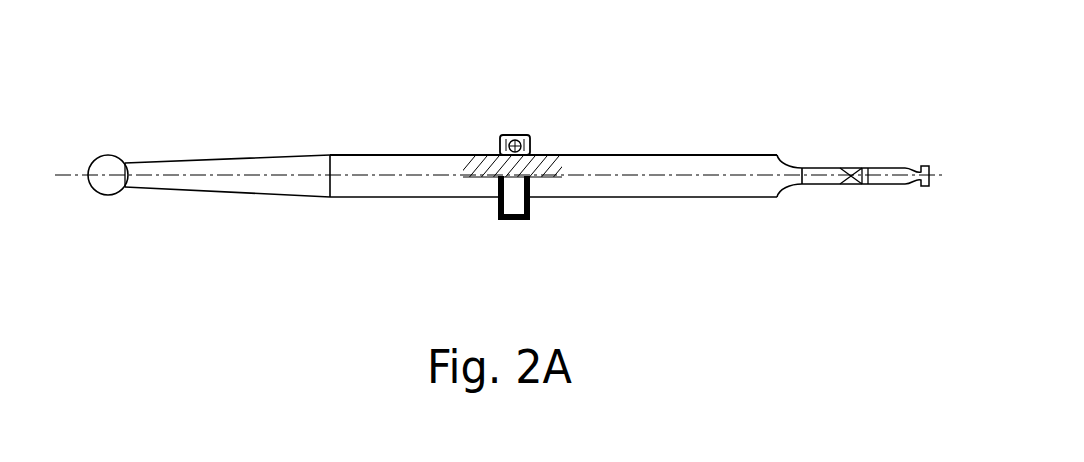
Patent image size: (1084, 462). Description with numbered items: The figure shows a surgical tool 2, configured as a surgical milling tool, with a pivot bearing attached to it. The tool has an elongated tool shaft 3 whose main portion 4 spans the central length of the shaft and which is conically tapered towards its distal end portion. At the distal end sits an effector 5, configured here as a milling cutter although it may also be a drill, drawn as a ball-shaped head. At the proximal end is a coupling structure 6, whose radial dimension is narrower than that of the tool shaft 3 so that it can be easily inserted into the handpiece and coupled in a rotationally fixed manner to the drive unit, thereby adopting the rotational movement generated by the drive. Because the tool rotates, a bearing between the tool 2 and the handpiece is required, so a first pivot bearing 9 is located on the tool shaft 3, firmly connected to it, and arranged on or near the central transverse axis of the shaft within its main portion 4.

The surgical tool 2 is at (401, 131).
The tool shaft 3 is at (683, 155).
The main portion 4 is at (777, 222).
The effector 5 is at (110, 155).
The coupling structure 6 is at (929, 222).
The first pivot bearing 9 is at (505, 135).